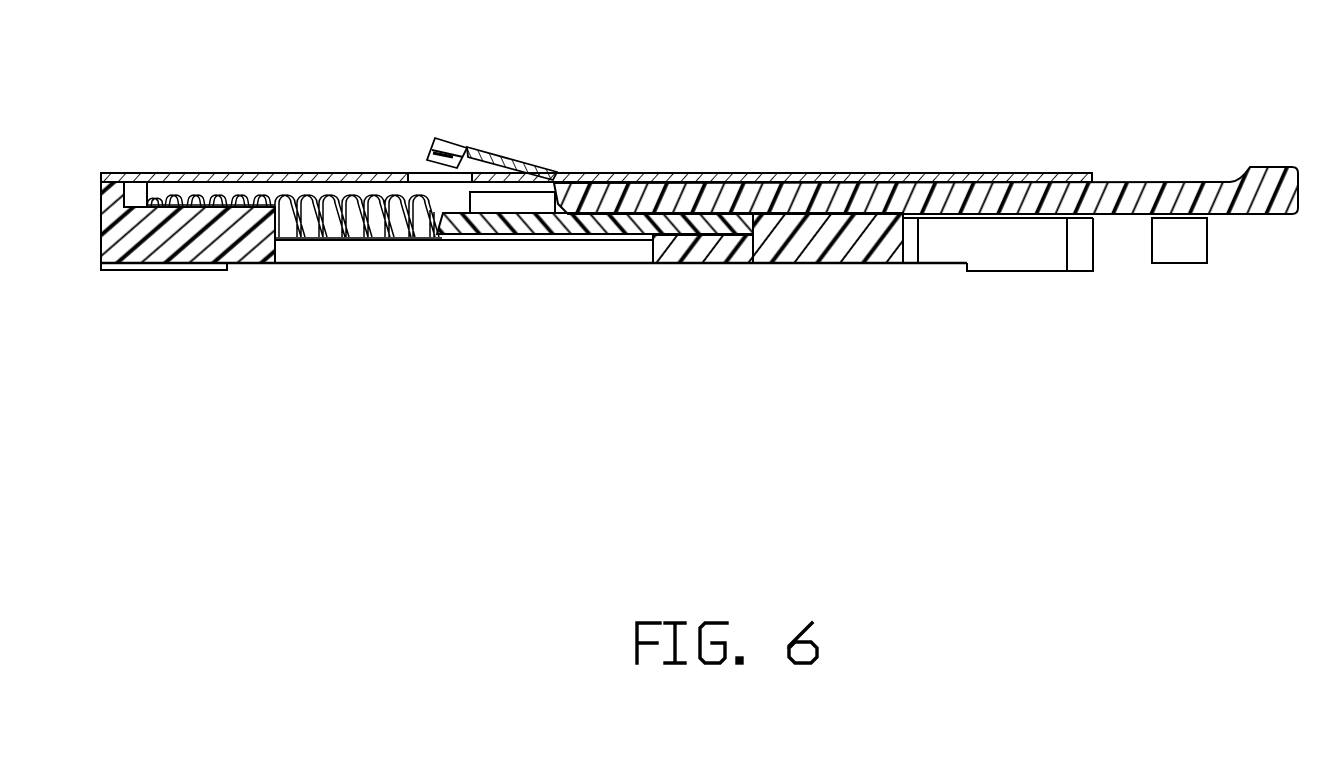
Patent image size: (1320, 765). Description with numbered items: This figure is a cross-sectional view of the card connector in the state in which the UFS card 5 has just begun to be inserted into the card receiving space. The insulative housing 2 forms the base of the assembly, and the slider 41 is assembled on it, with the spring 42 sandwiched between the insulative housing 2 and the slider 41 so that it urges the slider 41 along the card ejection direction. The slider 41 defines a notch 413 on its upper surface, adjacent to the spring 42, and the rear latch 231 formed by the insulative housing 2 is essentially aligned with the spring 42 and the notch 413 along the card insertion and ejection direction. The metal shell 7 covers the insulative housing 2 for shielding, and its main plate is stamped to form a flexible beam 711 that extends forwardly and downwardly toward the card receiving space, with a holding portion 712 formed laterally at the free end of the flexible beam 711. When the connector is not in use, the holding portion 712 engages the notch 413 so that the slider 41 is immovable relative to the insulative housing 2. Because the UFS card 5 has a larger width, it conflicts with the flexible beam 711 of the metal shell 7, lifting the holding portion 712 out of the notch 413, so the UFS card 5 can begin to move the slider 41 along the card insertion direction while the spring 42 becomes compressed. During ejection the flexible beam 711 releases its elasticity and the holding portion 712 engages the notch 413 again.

The insulative housing 2 is at (200, 242).
The UFS card 5 is at (1170, 200).
The metal shell 7 is at (815, 178).
The flexible beam 711 is at (583, 175).
The holding portion 712 is at (427, 152).
The slider 41 is at (597, 232).
The notch 413 is at (470, 205).
The spring 42 is at (352, 218).
The rear latch 231 is at (1182, 245).